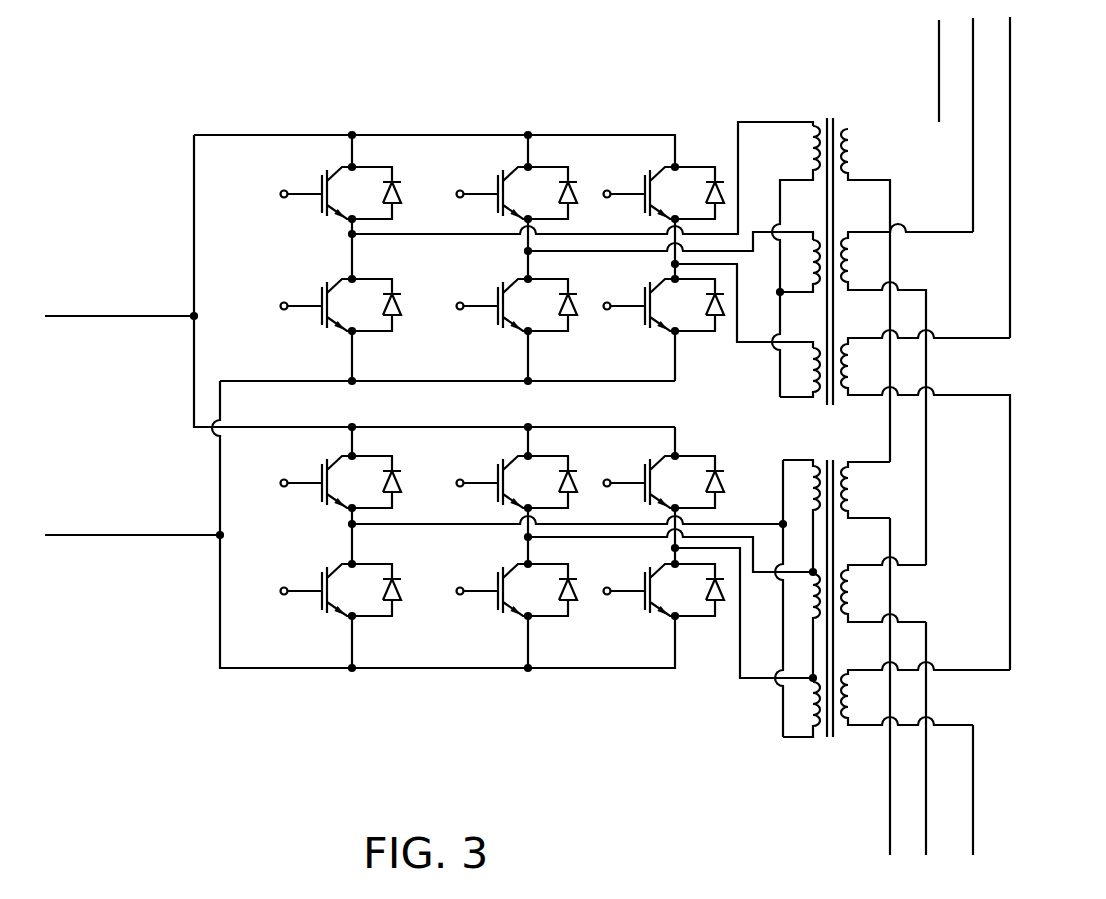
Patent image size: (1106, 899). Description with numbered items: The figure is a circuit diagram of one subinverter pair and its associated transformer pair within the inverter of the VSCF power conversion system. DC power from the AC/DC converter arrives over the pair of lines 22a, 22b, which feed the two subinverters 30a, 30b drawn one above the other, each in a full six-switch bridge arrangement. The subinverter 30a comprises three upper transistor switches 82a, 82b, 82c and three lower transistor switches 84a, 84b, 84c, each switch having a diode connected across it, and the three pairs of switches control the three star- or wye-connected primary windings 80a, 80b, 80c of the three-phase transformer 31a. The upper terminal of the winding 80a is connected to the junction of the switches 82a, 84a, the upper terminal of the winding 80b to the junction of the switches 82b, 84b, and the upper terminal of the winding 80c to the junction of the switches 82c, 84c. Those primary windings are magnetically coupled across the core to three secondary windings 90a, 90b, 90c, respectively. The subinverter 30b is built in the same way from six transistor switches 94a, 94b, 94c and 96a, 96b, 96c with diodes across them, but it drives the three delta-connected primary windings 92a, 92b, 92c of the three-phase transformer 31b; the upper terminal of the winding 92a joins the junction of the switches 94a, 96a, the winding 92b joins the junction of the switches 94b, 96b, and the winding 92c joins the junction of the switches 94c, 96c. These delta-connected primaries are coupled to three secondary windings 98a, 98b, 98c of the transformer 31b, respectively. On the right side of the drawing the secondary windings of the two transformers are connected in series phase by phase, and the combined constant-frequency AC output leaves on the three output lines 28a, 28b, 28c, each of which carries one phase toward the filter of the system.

The line 22a is at (105, 318).
The line 22b is at (119, 537).
The output line 28a is at (939, 40).
The output line 28b is at (973, 62).
The output line 28c is at (1010, 105).
The subinverter 30a is at (503, 231).
The subinverter 30b is at (512, 567).
The three-phase transformer 31a is at (862, 351).
The three-phase transformer 31b is at (862, 636).
The primary winding 80a is at (812, 141).
The primary winding 80b is at (812, 253).
The primary winding 80c is at (812, 364).
The transistor switch 82a is at (338, 176).
The transistor switch 82b is at (501, 176).
The transistor switch 82c is at (651, 174).
The transistor switch 84a is at (331, 284).
The transistor switch 84b is at (515, 323).
The transistor switch 84c is at (659, 322).
The secondary winding 90a is at (848, 152).
The secondary winding 90b is at (848, 258).
The secondary winding 90c is at (848, 366).
The primary winding 92a is at (815, 482).
The primary winding 92b is at (814, 600).
The primary winding 92c is at (814, 704).
The transistor switch 94a is at (331, 465).
The transistor switch 94b is at (501, 465).
The transistor switch 94c is at (651, 464).
The transistor switch 96a is at (340, 612).
The transistor switch 96b is at (517, 612).
The transistor switch 96c is at (662, 612).
The secondary winding 98a is at (848, 488).
The secondary winding 98b is at (848, 594).
The secondary winding 98c is at (848, 706).